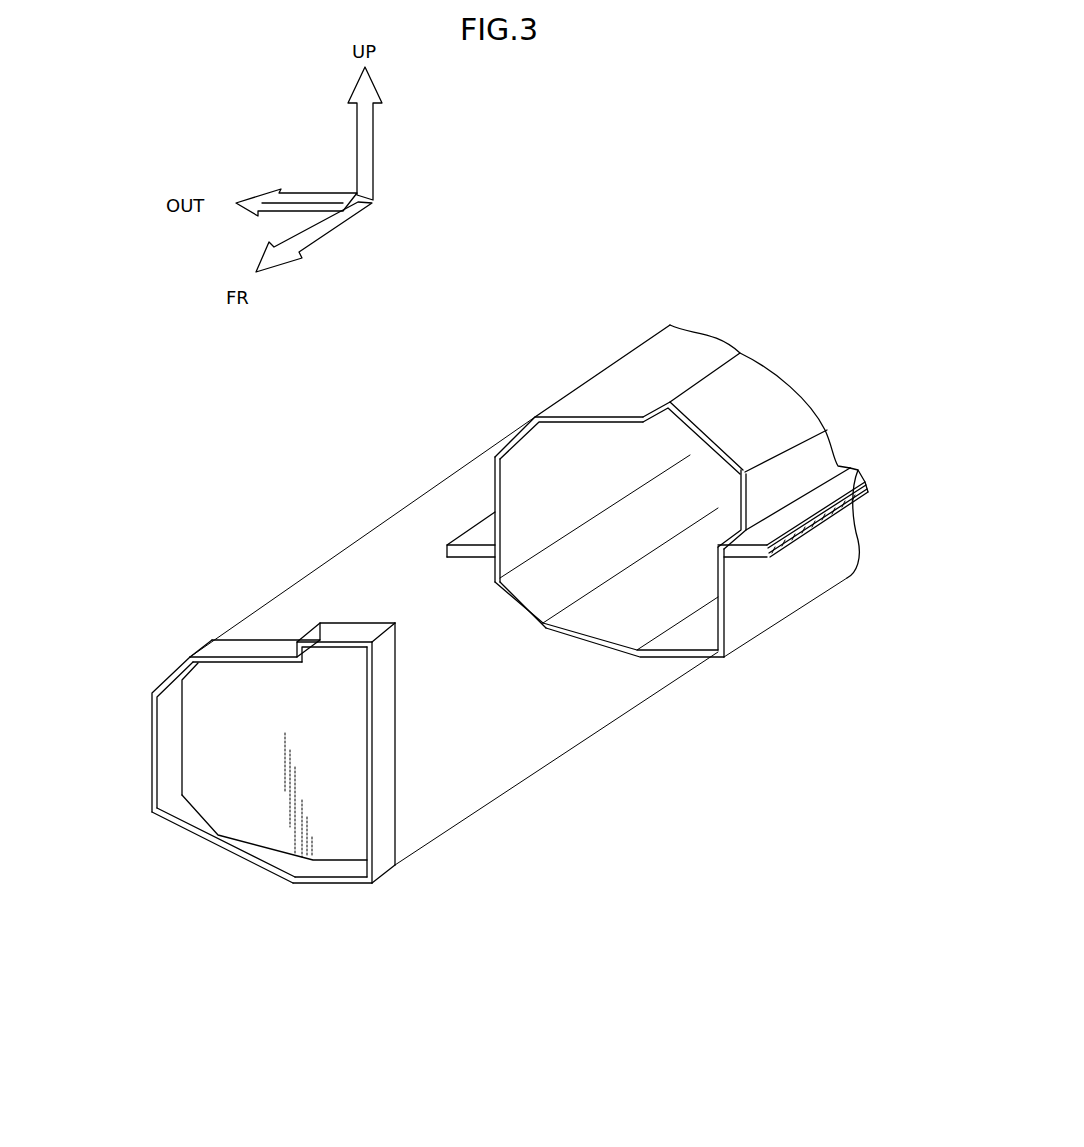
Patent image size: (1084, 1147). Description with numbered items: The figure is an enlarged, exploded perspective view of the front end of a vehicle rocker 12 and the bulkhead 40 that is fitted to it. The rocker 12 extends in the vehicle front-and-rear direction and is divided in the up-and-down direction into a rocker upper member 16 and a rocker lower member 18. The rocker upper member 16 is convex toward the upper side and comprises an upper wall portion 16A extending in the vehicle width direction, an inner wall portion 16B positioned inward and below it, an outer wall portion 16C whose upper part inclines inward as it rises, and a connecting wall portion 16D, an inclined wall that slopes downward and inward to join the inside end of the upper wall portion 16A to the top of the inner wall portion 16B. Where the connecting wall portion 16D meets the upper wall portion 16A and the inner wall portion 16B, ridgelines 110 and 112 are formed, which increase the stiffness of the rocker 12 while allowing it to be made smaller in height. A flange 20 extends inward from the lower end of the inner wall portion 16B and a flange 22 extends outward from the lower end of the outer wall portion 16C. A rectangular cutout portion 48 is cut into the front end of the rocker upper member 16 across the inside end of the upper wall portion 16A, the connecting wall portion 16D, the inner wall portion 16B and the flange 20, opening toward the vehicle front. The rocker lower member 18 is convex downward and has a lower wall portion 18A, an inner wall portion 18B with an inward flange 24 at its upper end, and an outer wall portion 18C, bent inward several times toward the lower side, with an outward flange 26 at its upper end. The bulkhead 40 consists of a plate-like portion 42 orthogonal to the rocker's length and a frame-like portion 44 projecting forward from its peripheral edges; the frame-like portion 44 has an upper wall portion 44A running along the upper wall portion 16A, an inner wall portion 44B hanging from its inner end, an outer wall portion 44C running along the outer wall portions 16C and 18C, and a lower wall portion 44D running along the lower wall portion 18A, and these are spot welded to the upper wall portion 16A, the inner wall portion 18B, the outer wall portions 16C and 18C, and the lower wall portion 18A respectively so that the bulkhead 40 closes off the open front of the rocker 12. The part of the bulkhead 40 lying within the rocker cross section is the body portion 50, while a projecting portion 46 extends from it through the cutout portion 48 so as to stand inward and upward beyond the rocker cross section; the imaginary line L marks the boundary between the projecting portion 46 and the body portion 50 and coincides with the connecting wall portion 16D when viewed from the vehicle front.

The rocker 12 is at (575, 385).
The rocker upper member 16 is at (490, 484).
The upper wall portion 16A is at (627, 378).
The inner wall portion 16B is at (816, 446).
The outer wall portion 16C is at (493, 500).
The connecting wall portion 16D is at (773, 390).
The rocker lower member 18 is at (548, 633).
The lower wall portion 18A is at (665, 658).
The inner wall portion 18B is at (747, 610).
The outer wall portion 18C is at (500, 597).
The flange 20 is at (810, 512).
The flange 22 is at (447, 544).
The flange 24 is at (833, 517).
The flange 26 is at (458, 560).
The bulkhead 40 is at (397, 763).
The plate-like portion 42 is at (272, 836).
The frame-like portion 44 is at (191, 826).
The upper wall portion 44A is at (311, 636).
The inner wall portion 44B is at (387, 738).
The outer wall portion 44C is at (152, 750).
The lower wall portion 44D is at (326, 888).
The projecting portion 46 is at (384, 651).
The cutout portion 48 is at (676, 436).
The body portion 50 is at (343, 790).
The ridgeline 110 is at (682, 396).
The ridgeline 112 is at (822, 428).
The imaginary line L is at (383, 672).